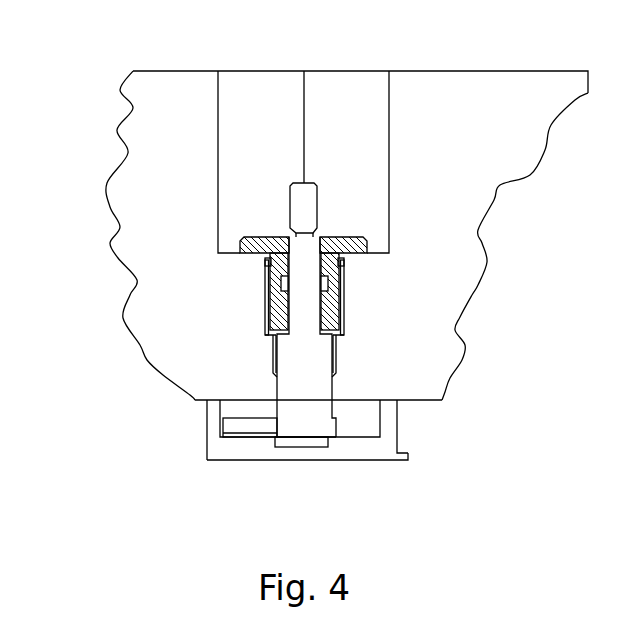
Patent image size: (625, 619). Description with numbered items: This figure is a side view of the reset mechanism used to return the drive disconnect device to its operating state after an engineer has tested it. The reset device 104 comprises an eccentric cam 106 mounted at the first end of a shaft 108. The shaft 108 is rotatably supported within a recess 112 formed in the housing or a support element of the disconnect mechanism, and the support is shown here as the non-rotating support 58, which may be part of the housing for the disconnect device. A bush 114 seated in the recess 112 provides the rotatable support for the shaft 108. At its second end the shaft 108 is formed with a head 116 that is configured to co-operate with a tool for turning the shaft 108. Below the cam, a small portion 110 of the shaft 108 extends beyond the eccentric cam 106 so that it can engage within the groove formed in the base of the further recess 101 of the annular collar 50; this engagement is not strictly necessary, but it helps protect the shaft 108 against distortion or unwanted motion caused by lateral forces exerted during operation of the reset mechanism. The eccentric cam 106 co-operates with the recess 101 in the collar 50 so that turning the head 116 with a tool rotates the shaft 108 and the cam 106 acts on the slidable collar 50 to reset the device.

The annular collar 50 is at (375, 453).
The non-rotating support 58 is at (466, 345).
The further recess 101 is at (385, 413).
The reset device 104 is at (288, 367).
The eccentric cam 106 is at (237, 428).
The shaft 108 is at (288, 355).
The small portion of the shaft 110 is at (293, 440).
The recess 112 is at (240, 239).
The bush 114 is at (342, 285).
The head 116 is at (312, 202).